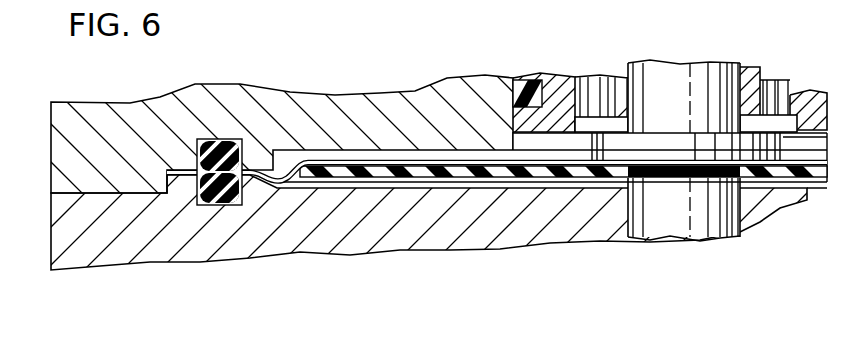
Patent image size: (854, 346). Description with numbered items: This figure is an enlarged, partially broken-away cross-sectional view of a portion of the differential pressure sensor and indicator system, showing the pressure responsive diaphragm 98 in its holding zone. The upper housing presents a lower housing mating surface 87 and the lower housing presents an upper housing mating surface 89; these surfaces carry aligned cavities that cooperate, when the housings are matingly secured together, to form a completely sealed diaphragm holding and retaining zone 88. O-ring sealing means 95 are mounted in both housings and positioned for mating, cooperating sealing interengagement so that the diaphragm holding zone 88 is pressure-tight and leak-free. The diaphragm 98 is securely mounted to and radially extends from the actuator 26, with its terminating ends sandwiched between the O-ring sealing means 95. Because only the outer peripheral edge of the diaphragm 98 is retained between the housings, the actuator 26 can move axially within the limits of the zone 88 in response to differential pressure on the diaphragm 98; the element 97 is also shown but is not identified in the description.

The actuator 26 is at (697, 106).
The lower housing mating surface 87 is at (68, 193).
The diaphragm holding and retaining zone 88 is at (358, 183).
The upper housing mating surface 89 is at (90, 193).
The O-ring sealing means 95 is at (218, 139).
The sleeve 97 is at (412, 178).
The diaphragm 98 is at (339, 161).